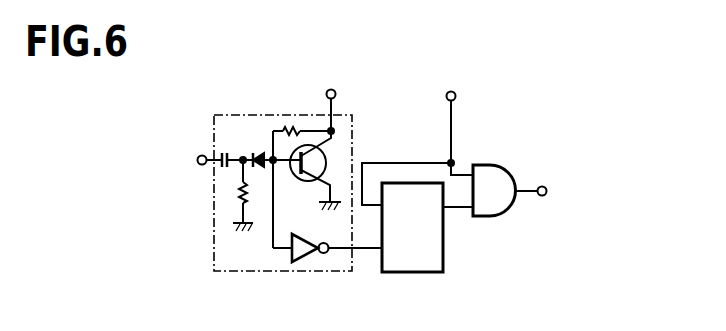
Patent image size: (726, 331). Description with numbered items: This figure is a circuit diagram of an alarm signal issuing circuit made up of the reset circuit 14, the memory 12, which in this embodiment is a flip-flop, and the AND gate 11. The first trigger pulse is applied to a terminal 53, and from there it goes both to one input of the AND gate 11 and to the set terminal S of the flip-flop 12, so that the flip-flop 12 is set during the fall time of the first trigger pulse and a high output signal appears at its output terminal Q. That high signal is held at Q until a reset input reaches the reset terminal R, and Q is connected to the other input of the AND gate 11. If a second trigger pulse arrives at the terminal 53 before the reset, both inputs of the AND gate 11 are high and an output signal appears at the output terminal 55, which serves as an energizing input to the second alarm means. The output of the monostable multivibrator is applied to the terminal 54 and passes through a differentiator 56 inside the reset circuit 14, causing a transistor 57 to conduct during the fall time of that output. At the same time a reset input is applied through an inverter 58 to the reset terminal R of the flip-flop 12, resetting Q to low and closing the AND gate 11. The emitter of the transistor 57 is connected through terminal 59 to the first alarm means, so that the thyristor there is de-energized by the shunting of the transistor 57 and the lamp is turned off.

The AND gate 11 is at (500, 170).
The memory 12 is at (433, 263).
The reset circuit 14 is at (353, 135).
The terminal 53 is at (456, 96).
The terminal 54 is at (198, 160).
The output terminal 55 is at (546, 188).
The differentiator 56 is at (236, 156).
The transistor 57 is at (306, 134).
The inverter 58 is at (298, 236).
The terminal 59 is at (336, 94).